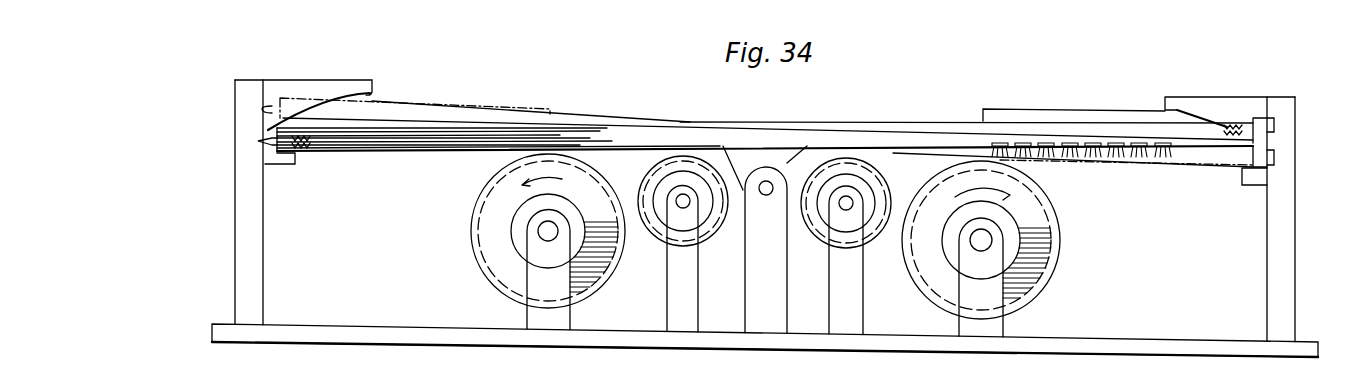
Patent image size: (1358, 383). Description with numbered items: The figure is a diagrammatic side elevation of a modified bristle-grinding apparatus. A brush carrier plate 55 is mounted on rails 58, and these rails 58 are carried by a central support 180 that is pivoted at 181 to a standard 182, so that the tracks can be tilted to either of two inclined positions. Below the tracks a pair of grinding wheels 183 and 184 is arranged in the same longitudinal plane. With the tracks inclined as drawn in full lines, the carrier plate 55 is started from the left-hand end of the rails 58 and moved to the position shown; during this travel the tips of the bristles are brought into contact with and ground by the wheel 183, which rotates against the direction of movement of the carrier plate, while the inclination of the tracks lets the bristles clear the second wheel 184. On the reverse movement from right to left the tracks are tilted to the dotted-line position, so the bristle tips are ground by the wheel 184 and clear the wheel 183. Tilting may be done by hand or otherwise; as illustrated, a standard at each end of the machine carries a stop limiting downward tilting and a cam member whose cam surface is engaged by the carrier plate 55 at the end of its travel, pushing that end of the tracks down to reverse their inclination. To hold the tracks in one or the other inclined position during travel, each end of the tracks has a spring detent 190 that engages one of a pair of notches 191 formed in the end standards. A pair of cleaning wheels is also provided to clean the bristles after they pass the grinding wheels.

The brush carrier plate 55 is at (1097, 113).
The rails 58 is at (965, 121).
The central support 180 is at (786, 160).
The pivot 181 is at (762, 194).
The standard 182 is at (749, 308).
The grinding wheel 183 is at (482, 254).
The grinding wheel 184 is at (1052, 260).
The spring detent 190 is at (1274, 125).
The notches 191 is at (1274, 161).